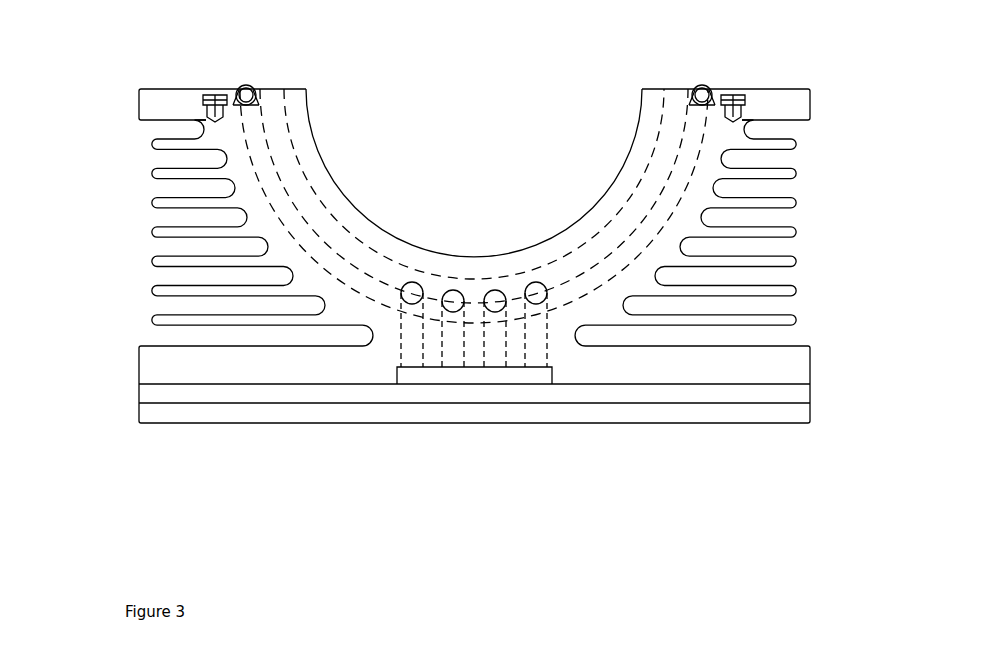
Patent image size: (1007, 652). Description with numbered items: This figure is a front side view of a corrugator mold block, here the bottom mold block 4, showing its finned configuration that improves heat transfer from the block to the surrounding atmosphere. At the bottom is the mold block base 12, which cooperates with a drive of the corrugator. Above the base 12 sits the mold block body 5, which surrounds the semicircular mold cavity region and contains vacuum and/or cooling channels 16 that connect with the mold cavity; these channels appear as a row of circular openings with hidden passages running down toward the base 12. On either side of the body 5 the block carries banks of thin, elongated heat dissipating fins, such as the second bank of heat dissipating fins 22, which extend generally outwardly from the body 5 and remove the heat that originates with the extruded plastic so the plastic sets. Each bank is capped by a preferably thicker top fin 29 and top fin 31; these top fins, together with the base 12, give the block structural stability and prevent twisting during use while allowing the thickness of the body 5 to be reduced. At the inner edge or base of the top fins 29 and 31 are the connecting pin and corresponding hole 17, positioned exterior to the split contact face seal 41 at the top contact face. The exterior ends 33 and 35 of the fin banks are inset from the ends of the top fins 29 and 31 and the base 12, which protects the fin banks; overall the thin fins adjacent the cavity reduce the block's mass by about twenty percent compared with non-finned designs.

The bottom mold block 4 is at (838, 431).
The mold block body 5 is at (641, 278).
The mold block base 12 is at (620, 405).
The vacuum and/or cooling channels 16 is at (539, 294).
The connecting pin and corresponding hole 17 is at (212, 101).
The second bank of heat dissipating fins 22 is at (854, 159).
The top fin 29 is at (143, 98).
The top fin 31 is at (792, 97).
The exterior ends of the heat dissipating fins 33 is at (153, 320).
The exterior ends of the heat dissipating fins 35 is at (795, 320).
The split contact face seal 41 is at (248, 85).